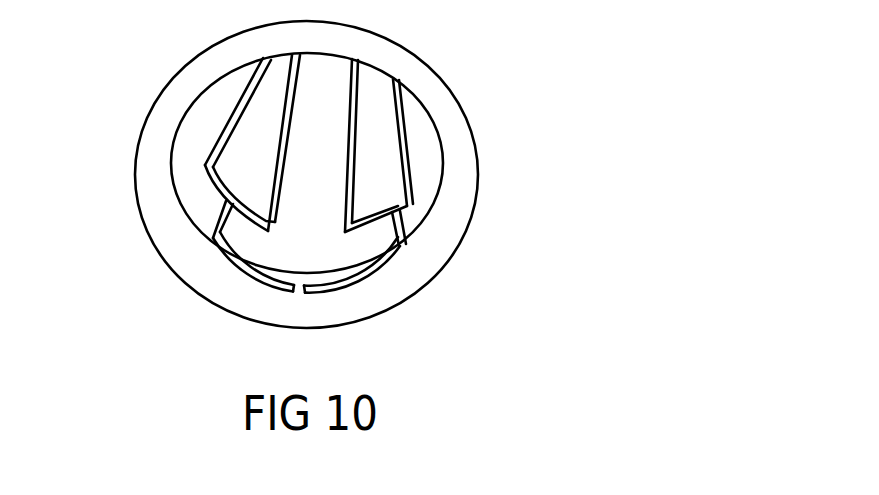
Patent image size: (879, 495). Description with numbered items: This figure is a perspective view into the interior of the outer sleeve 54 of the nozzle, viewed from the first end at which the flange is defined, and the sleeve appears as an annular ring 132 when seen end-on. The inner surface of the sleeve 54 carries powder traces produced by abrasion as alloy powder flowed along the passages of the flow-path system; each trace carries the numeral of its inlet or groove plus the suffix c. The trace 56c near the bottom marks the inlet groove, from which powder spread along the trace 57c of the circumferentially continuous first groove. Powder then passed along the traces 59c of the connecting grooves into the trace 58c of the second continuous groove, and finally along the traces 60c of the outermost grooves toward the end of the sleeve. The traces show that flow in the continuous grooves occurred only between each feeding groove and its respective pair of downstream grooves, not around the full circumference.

The outer sleeve 54 is at (170, 264).
The annular ring 132 is at (415, 266).
The powder trace of grooves 60 60c is at (346, 100).
The powder trace of groove 58 58c is at (366, 214).
The powder trace of grooves 59 59c is at (393, 213).
The powder trace of groove 57 57c is at (347, 268).
The powder trace of inlet groove 56 56c is at (298, 282).